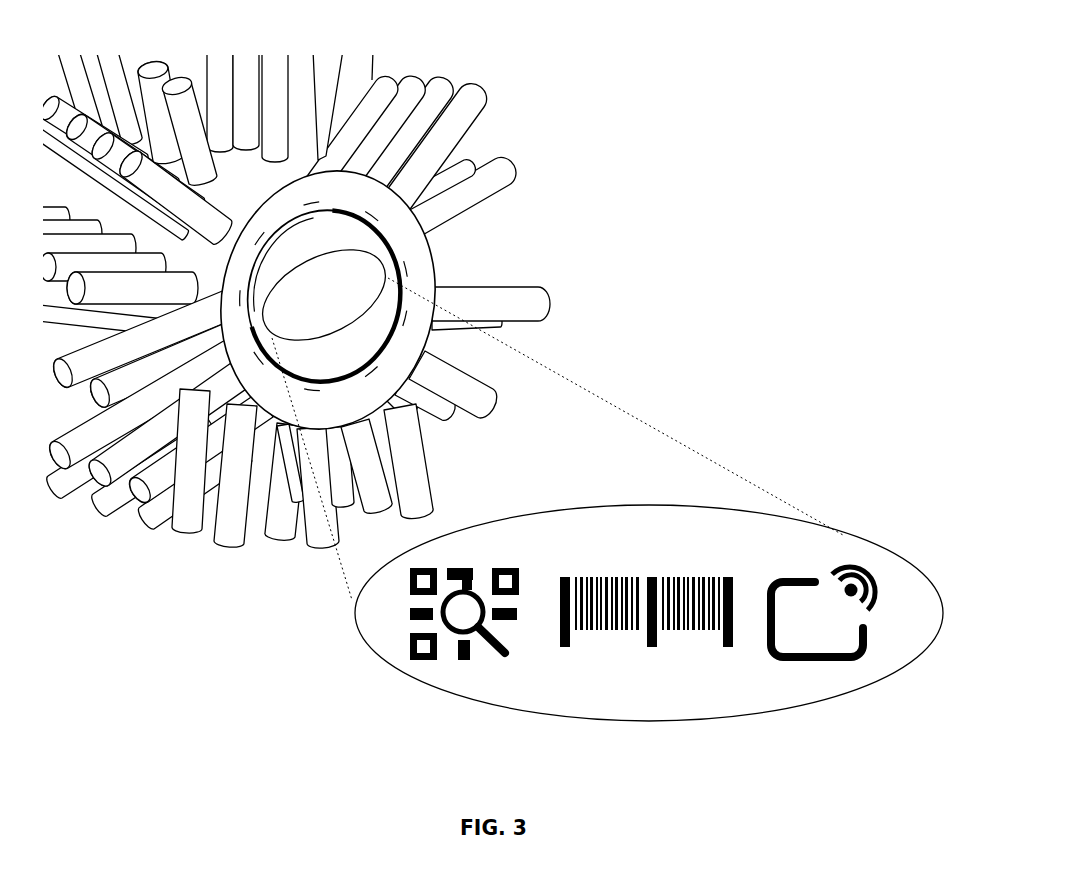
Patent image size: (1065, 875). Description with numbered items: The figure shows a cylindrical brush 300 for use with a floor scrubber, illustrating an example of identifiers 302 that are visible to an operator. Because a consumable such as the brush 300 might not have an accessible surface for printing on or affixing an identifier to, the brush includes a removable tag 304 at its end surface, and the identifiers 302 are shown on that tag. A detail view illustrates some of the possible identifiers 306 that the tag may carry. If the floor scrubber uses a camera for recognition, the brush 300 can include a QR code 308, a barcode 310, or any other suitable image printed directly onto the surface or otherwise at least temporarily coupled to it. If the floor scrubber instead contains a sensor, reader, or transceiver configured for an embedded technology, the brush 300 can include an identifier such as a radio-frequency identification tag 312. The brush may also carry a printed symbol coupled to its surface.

The cylindrical brush 300 is at (694, 172).
The identifiers 302 is at (400, 287).
The removable tag 304 is at (433, 338).
The possible identifiers 306 is at (368, 652).
The QR code 308 is at (445, 652).
The barcode 310 is at (657, 650).
The radio-frequency identification (RFID) tag 312 is at (828, 673).